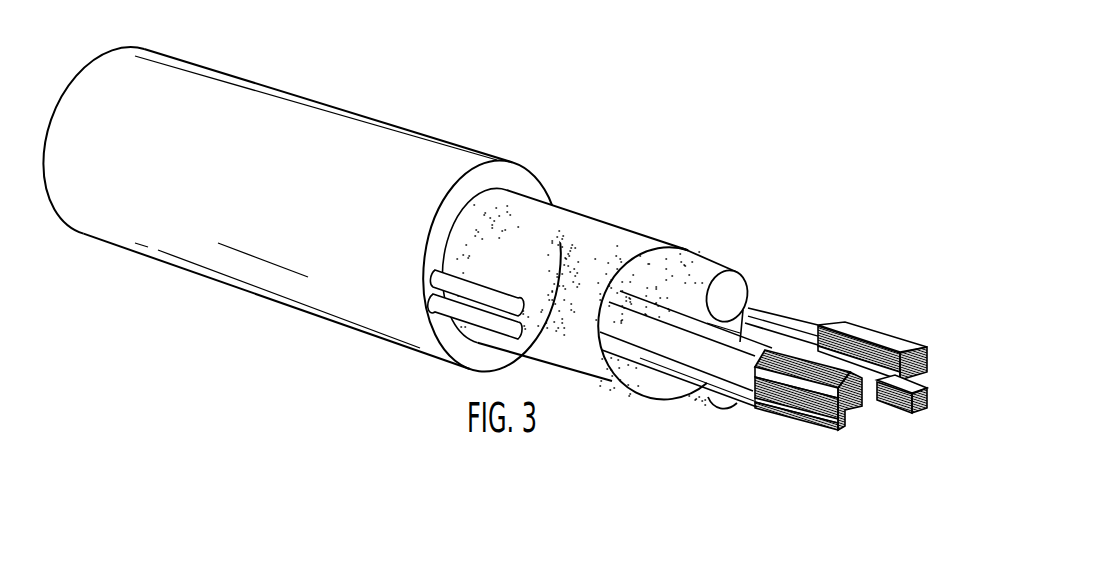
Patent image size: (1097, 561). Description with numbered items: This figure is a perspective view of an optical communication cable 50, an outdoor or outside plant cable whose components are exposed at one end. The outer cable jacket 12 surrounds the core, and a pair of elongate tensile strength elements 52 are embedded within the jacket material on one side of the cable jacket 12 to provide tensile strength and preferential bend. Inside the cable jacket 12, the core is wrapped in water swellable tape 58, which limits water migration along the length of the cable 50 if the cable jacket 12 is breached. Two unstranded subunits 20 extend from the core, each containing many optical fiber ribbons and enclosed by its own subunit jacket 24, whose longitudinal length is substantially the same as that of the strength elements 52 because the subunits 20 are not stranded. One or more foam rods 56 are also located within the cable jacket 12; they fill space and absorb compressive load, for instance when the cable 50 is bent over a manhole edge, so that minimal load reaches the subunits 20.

The cable jacket 12 is at (425, 155).
The subunit 20 is at (890, 318).
The subunit jacket 24 is at (738, 323).
The cable 50 is at (501, 266).
The elongate tensile strength elements 52 is at (465, 290).
The foam rods 56 is at (693, 272).
The water swellable tape 58 is at (553, 224).